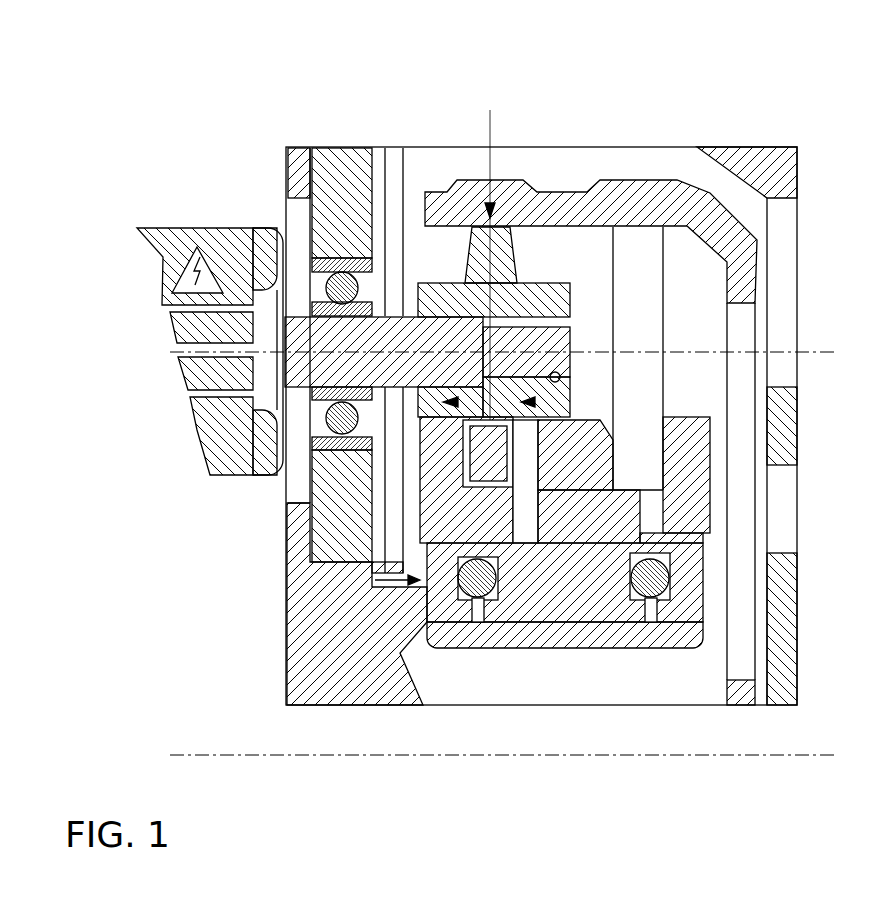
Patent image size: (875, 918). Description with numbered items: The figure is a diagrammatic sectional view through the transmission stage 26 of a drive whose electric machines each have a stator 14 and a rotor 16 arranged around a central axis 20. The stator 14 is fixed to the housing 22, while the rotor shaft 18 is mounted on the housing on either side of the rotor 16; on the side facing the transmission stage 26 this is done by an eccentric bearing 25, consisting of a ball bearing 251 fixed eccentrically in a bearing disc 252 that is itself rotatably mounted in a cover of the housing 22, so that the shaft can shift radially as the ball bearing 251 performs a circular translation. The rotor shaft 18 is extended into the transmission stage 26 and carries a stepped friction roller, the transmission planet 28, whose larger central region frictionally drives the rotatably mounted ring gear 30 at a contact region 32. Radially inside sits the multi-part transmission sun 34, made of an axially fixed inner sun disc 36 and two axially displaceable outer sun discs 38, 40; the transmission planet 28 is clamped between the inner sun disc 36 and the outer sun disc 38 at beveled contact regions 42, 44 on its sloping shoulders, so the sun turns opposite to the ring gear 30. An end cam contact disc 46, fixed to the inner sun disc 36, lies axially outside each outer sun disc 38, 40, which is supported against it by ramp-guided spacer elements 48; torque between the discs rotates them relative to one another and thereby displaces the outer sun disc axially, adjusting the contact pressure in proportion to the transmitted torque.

The stator 14 is at (165, 245).
The rotor 16 is at (245, 322).
The rotor shaft 18 is at (427, 338).
The central axis 20 is at (783, 755).
The housing 22 is at (305, 688).
The eccentric bearing 25 is at (308, 132).
The ball bearing 251 is at (315, 448).
The bearing disc 252 is at (348, 168).
The transmission stage 26 is at (741, 107).
The transmission planet 28 is at (540, 297).
The ring gear 30 is at (680, 202).
The contact region 32 is at (488, 225).
The transmission sun 34 is at (527, 692).
The inner sun disc 36 is at (563, 597).
The outer sun disc 38 is at (505, 613).
The outer sun disc 40 is at (612, 613).
The contact region 42 is at (543, 423).
The contact region 44 is at (436, 435).
The end cam contact disc 46 is at (440, 607).
The spacer element 48 is at (478, 592).